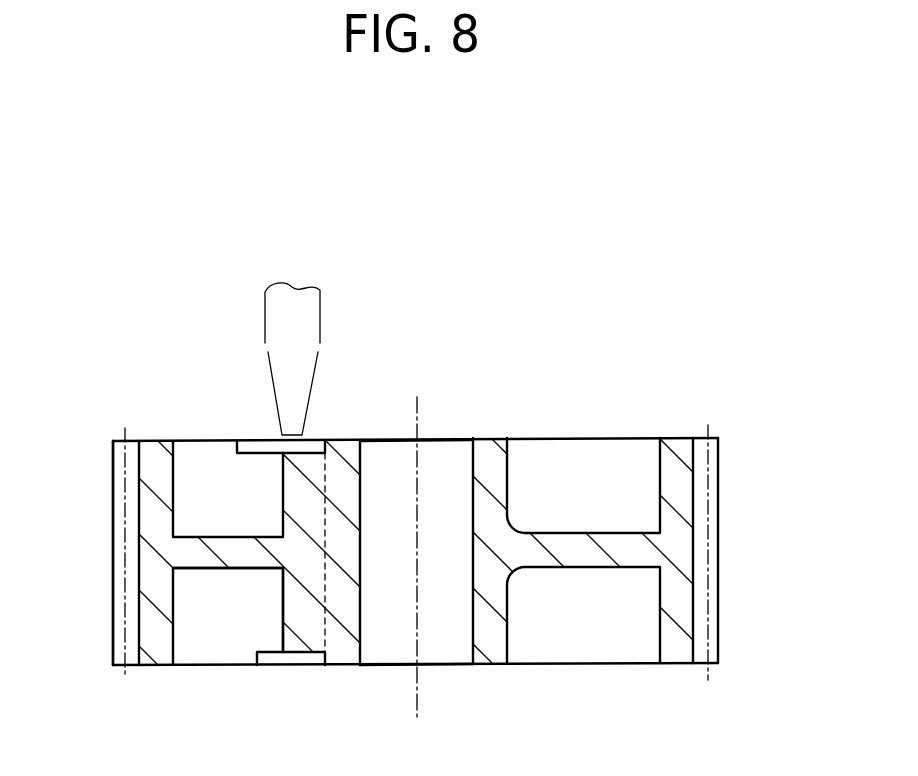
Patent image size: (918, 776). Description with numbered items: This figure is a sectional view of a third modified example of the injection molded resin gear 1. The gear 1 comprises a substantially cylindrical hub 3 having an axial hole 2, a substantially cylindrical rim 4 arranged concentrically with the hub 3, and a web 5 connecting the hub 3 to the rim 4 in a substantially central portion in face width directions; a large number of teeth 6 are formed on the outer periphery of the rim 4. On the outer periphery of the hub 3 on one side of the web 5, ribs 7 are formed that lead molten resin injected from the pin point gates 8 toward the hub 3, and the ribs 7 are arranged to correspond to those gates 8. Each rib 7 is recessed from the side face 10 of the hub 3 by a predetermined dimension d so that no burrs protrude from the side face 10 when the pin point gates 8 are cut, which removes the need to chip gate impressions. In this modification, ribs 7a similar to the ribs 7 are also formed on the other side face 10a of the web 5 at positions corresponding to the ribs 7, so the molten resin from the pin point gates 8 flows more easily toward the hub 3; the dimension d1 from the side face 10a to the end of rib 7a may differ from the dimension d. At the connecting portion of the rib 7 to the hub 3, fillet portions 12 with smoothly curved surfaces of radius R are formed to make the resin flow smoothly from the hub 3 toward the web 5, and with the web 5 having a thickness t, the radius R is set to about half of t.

The injection molded resin gear 1 is at (609, 435).
The axial hole 2 is at (473, 627).
The hub 3 is at (352, 438).
The rim 4 is at (157, 450).
The web 5 is at (190, 569).
The teeth 6 is at (113, 556).
The rib 7 is at (313, 445).
The rib 7a is at (294, 652).
The pin point gate 8 is at (282, 433).
The side face 10 is at (388, 437).
The side face 10a is at (388, 664).
The fillet portion 12 is at (518, 523).
The radius of curvature R is at (522, 532).
The dimension d is at (238, 507).
The dimension d1 is at (255, 630).
The thickness of the web t is at (208, 500).